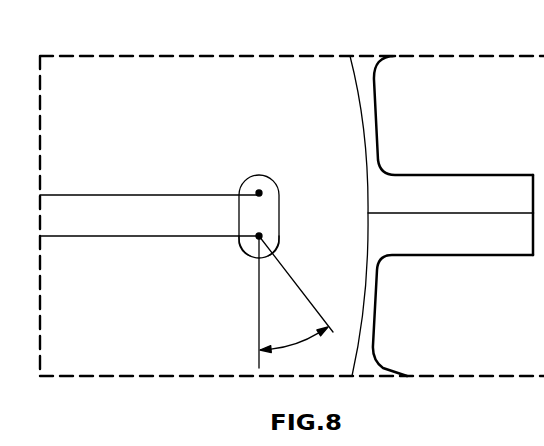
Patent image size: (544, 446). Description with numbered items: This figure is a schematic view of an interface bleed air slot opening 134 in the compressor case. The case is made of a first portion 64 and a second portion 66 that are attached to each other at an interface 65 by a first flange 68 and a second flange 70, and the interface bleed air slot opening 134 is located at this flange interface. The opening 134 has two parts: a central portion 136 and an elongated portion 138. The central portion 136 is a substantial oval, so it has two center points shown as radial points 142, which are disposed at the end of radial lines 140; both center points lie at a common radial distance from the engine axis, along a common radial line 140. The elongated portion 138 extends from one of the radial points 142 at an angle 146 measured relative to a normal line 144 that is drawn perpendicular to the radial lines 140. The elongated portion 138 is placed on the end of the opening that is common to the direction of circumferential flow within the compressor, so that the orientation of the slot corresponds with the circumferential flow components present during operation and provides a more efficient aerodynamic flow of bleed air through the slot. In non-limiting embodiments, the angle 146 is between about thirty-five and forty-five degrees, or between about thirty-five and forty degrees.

The first portion 64 is at (370, 111).
The interface 65 is at (492, 226).
The second portion 66 is at (372, 332).
The first flange 68 is at (435, 188).
The second flange 70 is at (432, 243).
The interface bleed air slot opening 134 is at (228, 248).
The central portion 136 is at (252, 219).
The elongated portion 138 is at (270, 245).
The radial lines 140 is at (133, 195).
The radial points 142 is at (272, 177).
The normal line 144 is at (247, 332).
The angle 146 is at (293, 347).